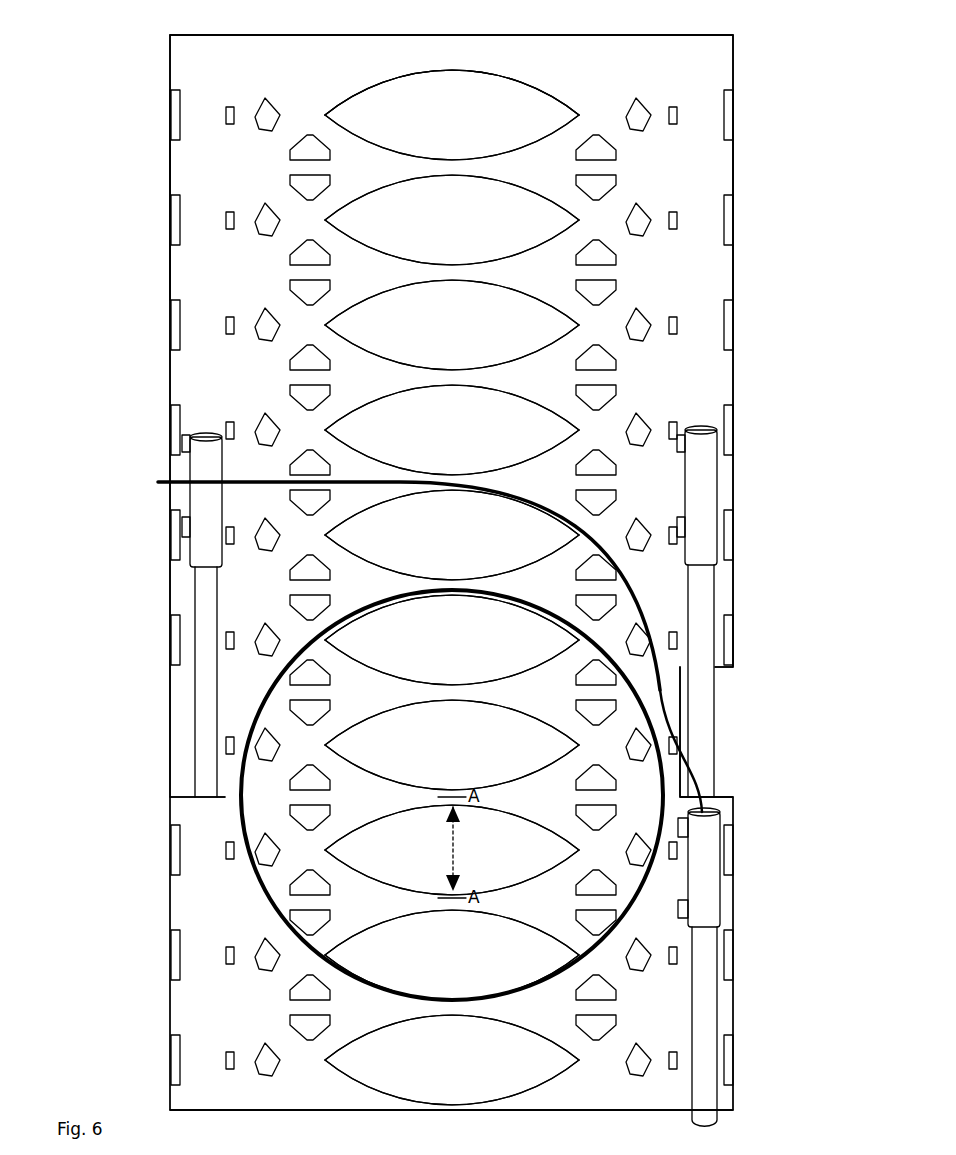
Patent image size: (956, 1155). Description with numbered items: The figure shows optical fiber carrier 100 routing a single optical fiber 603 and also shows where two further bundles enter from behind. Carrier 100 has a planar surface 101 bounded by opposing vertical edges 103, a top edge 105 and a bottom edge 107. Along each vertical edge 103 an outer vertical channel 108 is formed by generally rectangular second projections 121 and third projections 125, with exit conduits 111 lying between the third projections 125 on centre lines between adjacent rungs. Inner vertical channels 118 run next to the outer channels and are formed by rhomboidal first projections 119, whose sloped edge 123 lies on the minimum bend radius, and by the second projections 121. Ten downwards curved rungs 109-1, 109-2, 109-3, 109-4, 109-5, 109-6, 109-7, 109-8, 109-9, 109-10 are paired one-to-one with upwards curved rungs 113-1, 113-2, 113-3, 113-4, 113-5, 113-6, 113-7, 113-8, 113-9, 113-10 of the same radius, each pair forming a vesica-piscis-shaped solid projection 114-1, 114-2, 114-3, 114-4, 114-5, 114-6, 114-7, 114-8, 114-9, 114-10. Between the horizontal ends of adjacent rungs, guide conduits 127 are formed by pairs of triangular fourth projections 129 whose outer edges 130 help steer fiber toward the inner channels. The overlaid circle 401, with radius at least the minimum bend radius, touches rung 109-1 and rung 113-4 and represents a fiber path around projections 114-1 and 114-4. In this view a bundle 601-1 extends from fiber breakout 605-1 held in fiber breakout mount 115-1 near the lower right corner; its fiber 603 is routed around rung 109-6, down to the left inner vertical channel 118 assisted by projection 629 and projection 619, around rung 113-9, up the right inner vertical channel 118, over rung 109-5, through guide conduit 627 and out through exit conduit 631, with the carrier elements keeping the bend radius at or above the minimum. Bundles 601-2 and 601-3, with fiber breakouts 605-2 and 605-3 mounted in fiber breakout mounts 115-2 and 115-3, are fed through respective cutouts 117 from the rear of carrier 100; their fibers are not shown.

The optical fiber carrier 100 is at (146, 1034).
The planar surface 101 is at (321, 70).
The vertical edges 103 is at (170, 78).
The top edge 105 is at (248, 35).
The bottom edge 107 is at (200, 1113).
The outer vertical channel 108 is at (208, 110).
The downwards curved rung 109-1 is at (428, 72).
The downwards curved rung 109-2 is at (428, 177).
The downwards curved rung 109-3 is at (428, 282).
The downwards curved rung 109-4 is at (428, 387).
The downwards curved rung 109-5 is at (425, 492).
The downwards curved rung 109-6 is at (428, 598).
The downwards curved rung 109-7 is at (425, 702).
The downwards curved rung 109-8 is at (425, 807).
The downwards curved rung 109-9 is at (425, 912).
The downwards curved rung 109-10 is at (428, 1016).
The exit conduits 111 is at (170, 170).
The upwards curved rung 113-1 is at (540, 140).
The upwards curved rung 113-2 is at (540, 245).
The upwards curved rung 113-3 is at (540, 350).
The upwards curved rung 113-4 is at (540, 455).
The upwards curved rung 113-5 is at (540, 560).
The upwards curved rung 113-6 is at (542, 663).
The upwards curved rung 113-7 is at (542, 768).
The upwards curved rung 113-8 is at (555, 866).
The upwards curved rung 113-9 is at (540, 980).
The upwards curved rung 113-10 is at (542, 1085).
The solid projection 114-1 is at (478, 115).
The solid projection 114-2 is at (478, 220).
The solid projection 114-3 is at (478, 325).
The solid projection 114-4 is at (478, 430).
The solid projection 114-5 is at (478, 535).
The solid projection 114-6 is at (478, 640).
The solid projection 114-7 is at (478, 745).
The solid projection 114-8 is at (459, 850).
The solid projection 114-9 is at (478, 955).
The solid projection 114-10 is at (484, 1060).
The fiber breakout mount 115-1 is at (680, 906).
The fiber breakout mount 115-2 is at (685, 430).
The fiber breakout mount 115-3 is at (188, 435).
The cutout 117 is at (188, 725).
The inner vertical channel 118 is at (246, 110).
The first projections 119 is at (260, 210).
The second projections 121 is at (230, 212).
The edge 123 is at (260, 220).
The third projections 125 is at (174, 228).
The guide conduits 127 is at (290, 273).
The fourth projections 129 is at (322, 263).
The outer edge 130 is at (310, 138).
The circle 401 is at (518, 80).
The bundle of optical fibers 601-1 is at (717, 1002).
The bundle of optical fibers 601-2 is at (715, 597).
The bundle of optical fibers 601-3 is at (190, 558).
The optical fiber 603 is at (157, 485).
The fiber breakout 605-1 is at (722, 898).
The fiber breakout 605-2 is at (700, 450).
The fiber breakout 605-3 is at (205, 693).
The projection 619 is at (277, 752).
The guide conduit 627 is at (288, 477).
The projection 629 is at (329, 685).
The exit conduit 631 is at (170, 468).